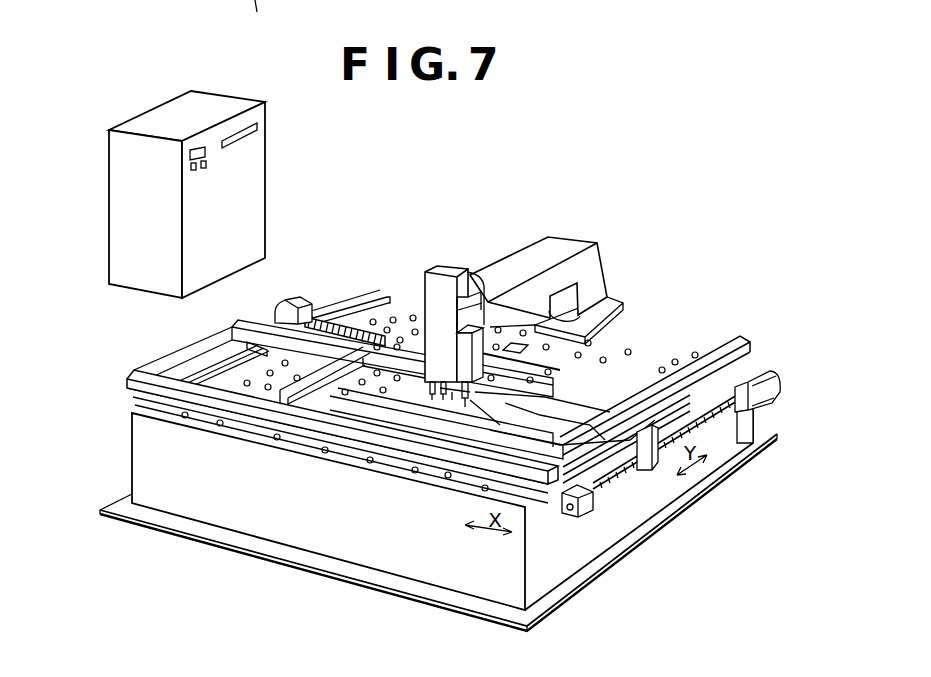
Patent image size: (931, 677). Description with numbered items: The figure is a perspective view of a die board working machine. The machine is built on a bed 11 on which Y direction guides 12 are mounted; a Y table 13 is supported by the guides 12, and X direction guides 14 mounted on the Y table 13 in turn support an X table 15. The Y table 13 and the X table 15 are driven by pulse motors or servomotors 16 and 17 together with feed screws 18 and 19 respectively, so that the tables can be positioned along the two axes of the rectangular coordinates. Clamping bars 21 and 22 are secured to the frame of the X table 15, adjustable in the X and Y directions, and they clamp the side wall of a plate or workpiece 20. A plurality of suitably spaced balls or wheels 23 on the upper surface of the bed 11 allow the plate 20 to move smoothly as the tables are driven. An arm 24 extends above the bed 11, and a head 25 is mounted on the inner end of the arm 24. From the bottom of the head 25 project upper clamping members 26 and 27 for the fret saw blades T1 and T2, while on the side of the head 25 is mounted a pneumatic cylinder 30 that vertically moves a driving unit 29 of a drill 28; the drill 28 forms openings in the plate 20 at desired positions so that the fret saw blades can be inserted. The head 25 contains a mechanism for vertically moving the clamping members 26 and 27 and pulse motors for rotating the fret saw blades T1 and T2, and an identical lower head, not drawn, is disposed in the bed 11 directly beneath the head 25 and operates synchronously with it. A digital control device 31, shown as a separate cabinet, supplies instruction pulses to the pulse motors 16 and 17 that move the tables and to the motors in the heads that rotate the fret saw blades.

The bed 11 is at (207, 508).
The Y direction guides 12 is at (372, 302).
The Y table 13 is at (596, 466).
The X direction guides 14 is at (246, 326).
The X table 15 is at (607, 428).
The pulse motor 16 is at (768, 375).
The pulse motor 17 is at (286, 310).
The feed screw 18 is at (710, 420).
The feed screw 19 is at (400, 312).
The plate 20 is at (547, 416).
The clamping bar 21 is at (327, 470).
The clamping bar 22 is at (603, 388).
The balls or wheels 23 is at (247, 433).
The arm 24 is at (562, 250).
The head 25 is at (433, 283).
The upper clamping member 26 is at (448, 380).
The upper clamping member 27 is at (443, 396).
The drill 28 is at (465, 404).
The driving unit 29 is at (458, 326).
The pneumatic cylinder 30 is at (484, 305).
The digital control device 31 is at (262, 150).
The fret saw blade T1 is at (432, 396).
The fret saw blade T2 is at (452, 396).